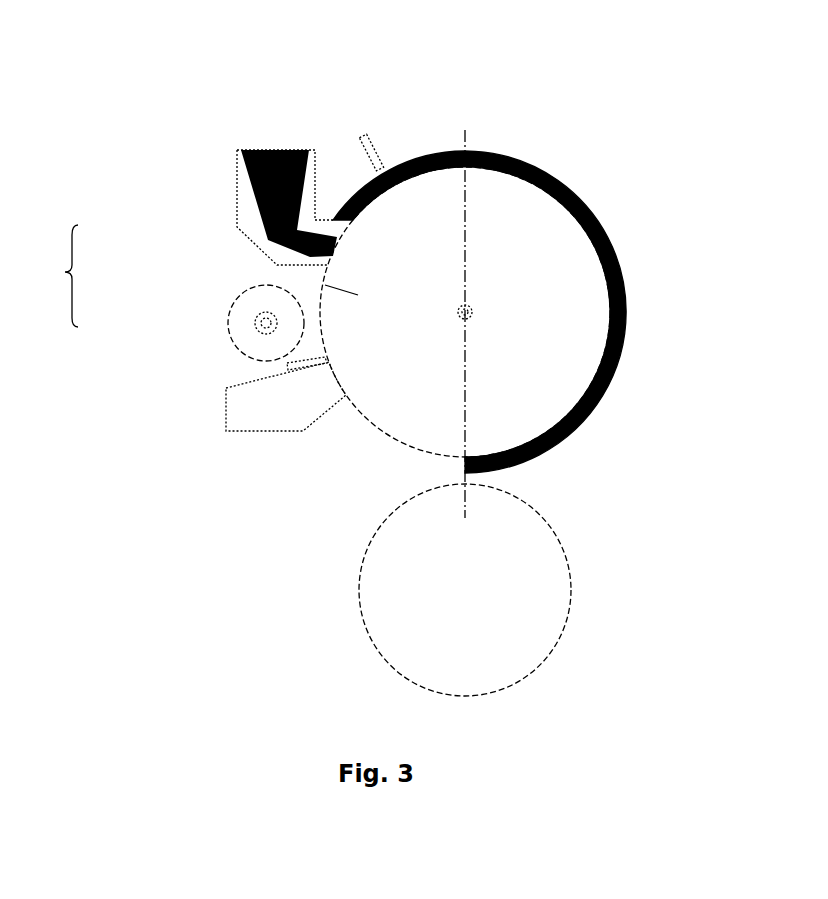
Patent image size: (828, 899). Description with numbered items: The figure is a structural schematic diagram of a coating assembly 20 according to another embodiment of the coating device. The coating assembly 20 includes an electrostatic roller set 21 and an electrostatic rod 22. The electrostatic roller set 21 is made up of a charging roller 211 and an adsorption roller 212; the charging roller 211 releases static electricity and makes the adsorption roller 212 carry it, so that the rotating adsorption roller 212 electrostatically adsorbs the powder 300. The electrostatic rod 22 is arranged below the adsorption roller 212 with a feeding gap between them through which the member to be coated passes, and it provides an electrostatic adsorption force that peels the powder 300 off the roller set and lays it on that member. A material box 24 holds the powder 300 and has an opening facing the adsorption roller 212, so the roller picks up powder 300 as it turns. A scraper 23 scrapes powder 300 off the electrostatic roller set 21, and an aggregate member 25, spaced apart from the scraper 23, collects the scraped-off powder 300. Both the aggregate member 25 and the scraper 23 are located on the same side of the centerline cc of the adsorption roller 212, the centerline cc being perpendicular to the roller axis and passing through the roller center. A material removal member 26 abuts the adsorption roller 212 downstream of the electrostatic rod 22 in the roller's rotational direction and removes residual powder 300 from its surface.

The coating assembly 20 is at (120, 35).
The electrostatic roller set 21 is at (191, 287).
The charging roller 211 is at (240, 335).
The adsorption roller 212 is at (325, 285).
The electrostatic rod 22 is at (535, 610).
The scraper 23 is at (372, 148).
The material box 24 is at (237, 180).
The aggregate member 25 is at (272, 422).
The material removal member 26 is at (325, 360).
The powder 300 is at (615, 242).
The centerline cc is at (465, 418).